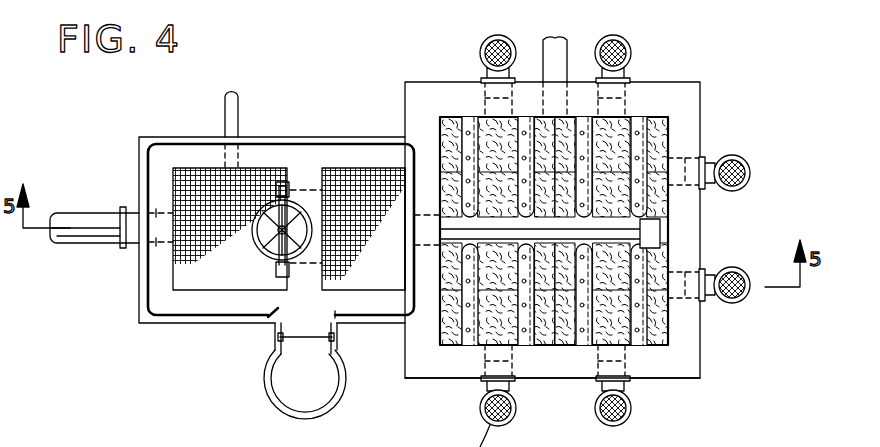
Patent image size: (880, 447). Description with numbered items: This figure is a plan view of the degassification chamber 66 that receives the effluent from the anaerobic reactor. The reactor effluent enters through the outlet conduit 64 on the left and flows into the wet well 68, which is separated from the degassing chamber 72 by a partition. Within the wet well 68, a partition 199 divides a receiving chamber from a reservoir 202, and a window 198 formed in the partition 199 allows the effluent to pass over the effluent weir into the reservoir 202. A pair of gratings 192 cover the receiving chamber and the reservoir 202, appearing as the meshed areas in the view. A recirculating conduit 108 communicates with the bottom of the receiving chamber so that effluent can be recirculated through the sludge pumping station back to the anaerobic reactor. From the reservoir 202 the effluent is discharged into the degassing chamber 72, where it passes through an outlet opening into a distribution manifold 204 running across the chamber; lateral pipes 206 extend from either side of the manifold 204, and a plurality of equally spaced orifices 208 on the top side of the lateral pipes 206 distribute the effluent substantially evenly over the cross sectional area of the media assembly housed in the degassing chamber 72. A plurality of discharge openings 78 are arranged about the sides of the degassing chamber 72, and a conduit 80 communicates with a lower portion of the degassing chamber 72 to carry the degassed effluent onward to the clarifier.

The outlet conduit 64 is at (96, 218).
The degassification chamber 66 is at (693, 65).
The wet well 68 is at (188, 130).
The degassing chamber 72 is at (662, 388).
The discharge openings 78 is at (617, 36).
The conduit 80 is at (555, 58).
The recirculating conduit 108 is at (230, 120).
The gratings 192 is at (202, 280).
The window 198 is at (300, 270).
The partition 199 is at (310, 175).
The reservoir 202 is at (373, 170).
The distribution manifold 204 is at (653, 230).
The lateral pipes 206 is at (643, 147).
The orifices 208 is at (468, 133).